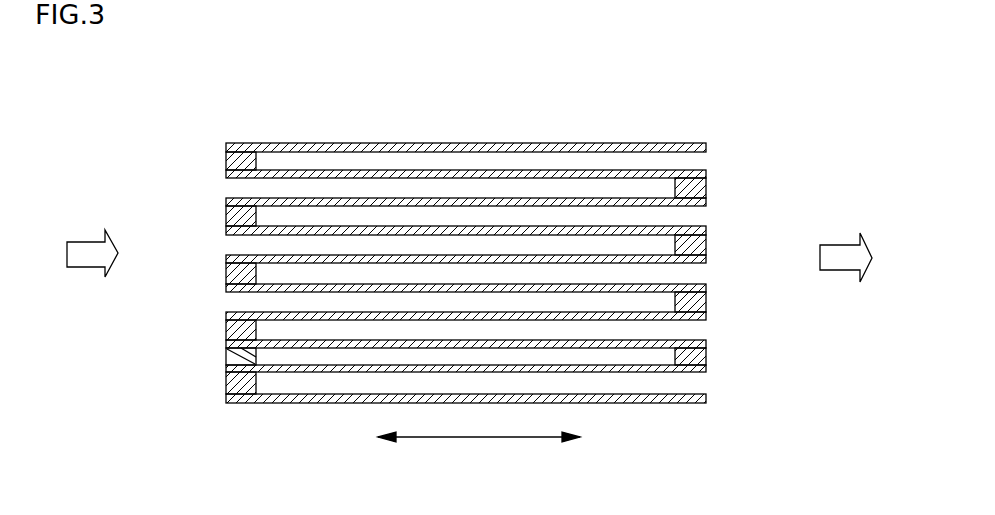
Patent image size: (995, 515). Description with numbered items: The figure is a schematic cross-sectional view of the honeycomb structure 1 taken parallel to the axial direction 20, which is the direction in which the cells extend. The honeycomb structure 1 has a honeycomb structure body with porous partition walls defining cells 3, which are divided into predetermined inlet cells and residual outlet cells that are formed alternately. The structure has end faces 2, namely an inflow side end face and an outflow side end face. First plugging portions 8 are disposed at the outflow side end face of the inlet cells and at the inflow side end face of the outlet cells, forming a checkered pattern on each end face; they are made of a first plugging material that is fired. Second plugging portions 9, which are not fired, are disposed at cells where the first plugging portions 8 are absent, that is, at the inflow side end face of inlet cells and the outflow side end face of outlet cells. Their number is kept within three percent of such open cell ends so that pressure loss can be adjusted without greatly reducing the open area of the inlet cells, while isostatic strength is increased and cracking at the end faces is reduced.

The honeycomb structure 1 is at (610, 97).
The end face 2 is at (227, 148).
The cell 3 is at (322, 190).
The first plugging portion 8 is at (240, 160).
The second plugging portion 9 is at (242, 357).
The axial direction 20 is at (468, 437).